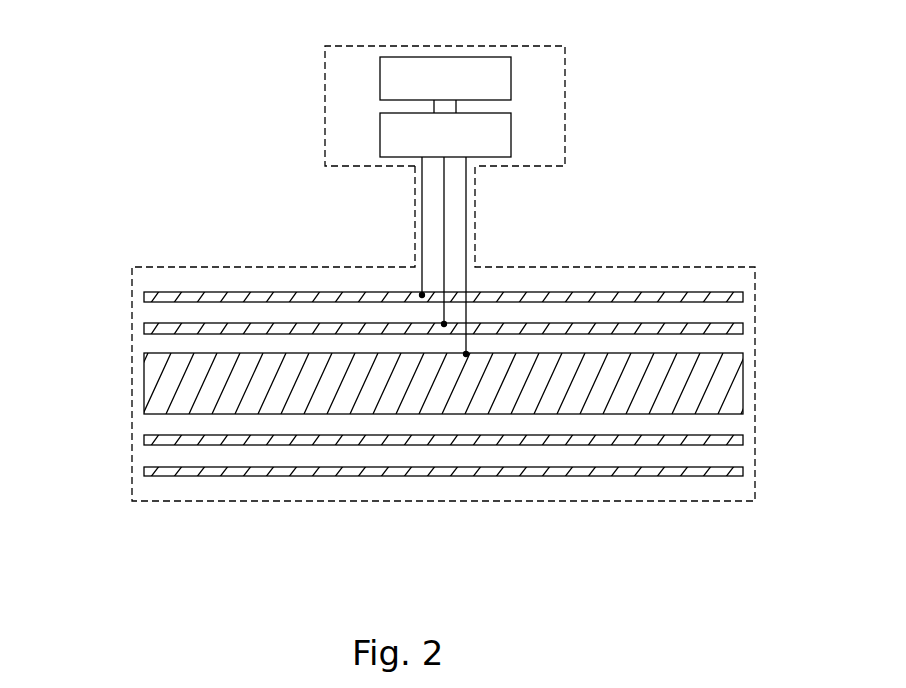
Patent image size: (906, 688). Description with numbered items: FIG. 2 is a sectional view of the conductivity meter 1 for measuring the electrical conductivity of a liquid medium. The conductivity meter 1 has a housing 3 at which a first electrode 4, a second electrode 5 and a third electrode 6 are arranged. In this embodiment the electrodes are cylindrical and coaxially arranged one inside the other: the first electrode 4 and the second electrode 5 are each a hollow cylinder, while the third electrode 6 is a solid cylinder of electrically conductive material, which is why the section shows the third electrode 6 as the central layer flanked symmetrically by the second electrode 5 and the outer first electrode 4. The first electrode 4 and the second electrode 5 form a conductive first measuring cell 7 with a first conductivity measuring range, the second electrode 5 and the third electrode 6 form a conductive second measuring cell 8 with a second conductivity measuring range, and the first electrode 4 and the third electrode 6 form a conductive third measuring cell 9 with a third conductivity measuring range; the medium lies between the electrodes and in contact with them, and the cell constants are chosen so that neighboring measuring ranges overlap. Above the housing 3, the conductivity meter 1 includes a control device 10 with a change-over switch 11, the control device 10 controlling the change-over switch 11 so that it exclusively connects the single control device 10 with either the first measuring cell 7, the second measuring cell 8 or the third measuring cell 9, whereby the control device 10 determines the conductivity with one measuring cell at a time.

The conductivity meter 1 is at (665, 114).
The housing 3 is at (665, 485).
The first electrode 4 is at (144, 296).
The second electrode 5 is at (144, 328).
The third electrode 6 is at (160, 393).
The first measuring cell 7 is at (422, 306).
The second measuring cell 8 is at (426, 370).
The third measuring cell 9 is at (428, 448).
The control device 10 is at (416, 88).
The change-over switch 11 is at (416, 144).